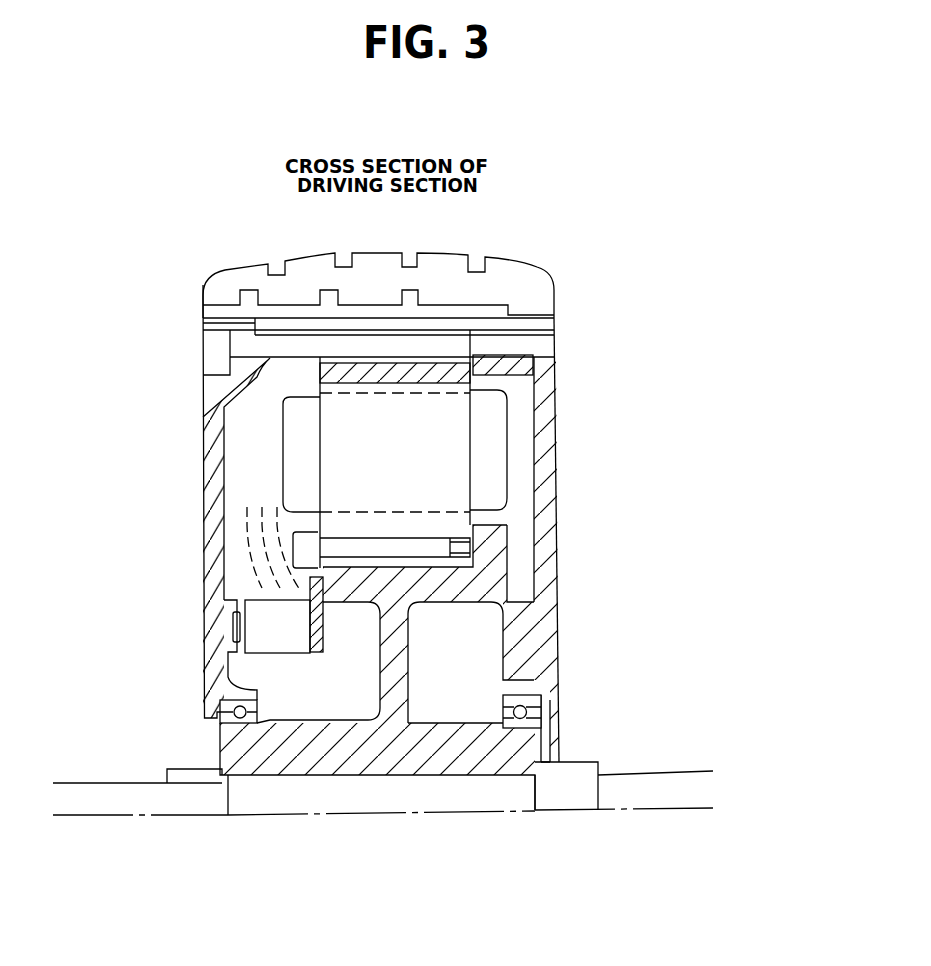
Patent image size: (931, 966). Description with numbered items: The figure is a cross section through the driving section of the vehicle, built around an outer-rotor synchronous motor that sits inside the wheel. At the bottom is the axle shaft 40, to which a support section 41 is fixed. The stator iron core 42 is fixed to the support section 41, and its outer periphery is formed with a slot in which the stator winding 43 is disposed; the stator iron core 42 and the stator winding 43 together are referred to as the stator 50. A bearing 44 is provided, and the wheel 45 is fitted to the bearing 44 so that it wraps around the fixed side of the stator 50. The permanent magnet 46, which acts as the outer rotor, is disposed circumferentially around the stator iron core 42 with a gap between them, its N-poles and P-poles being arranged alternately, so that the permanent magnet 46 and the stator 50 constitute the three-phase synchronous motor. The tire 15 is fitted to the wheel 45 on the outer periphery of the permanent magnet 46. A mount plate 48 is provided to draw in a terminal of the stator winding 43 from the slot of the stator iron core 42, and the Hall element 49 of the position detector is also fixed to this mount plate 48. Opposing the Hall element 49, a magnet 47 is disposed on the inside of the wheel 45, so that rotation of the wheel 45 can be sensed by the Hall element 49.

The tire 15 is at (556, 297).
The axle shaft 40 is at (488, 793).
The support section 41 is at (472, 586).
The stator iron core 42 is at (440, 494).
The stator winding 43 is at (485, 450).
The bearing 44 is at (522, 689).
The wheel 45 is at (213, 462).
The permanent magnet 46 is at (473, 368).
The magnet 47 is at (236, 628).
The mount plate 48 is at (312, 585).
The Hall element 49 is at (262, 612).
The stator 50 is at (556, 449).